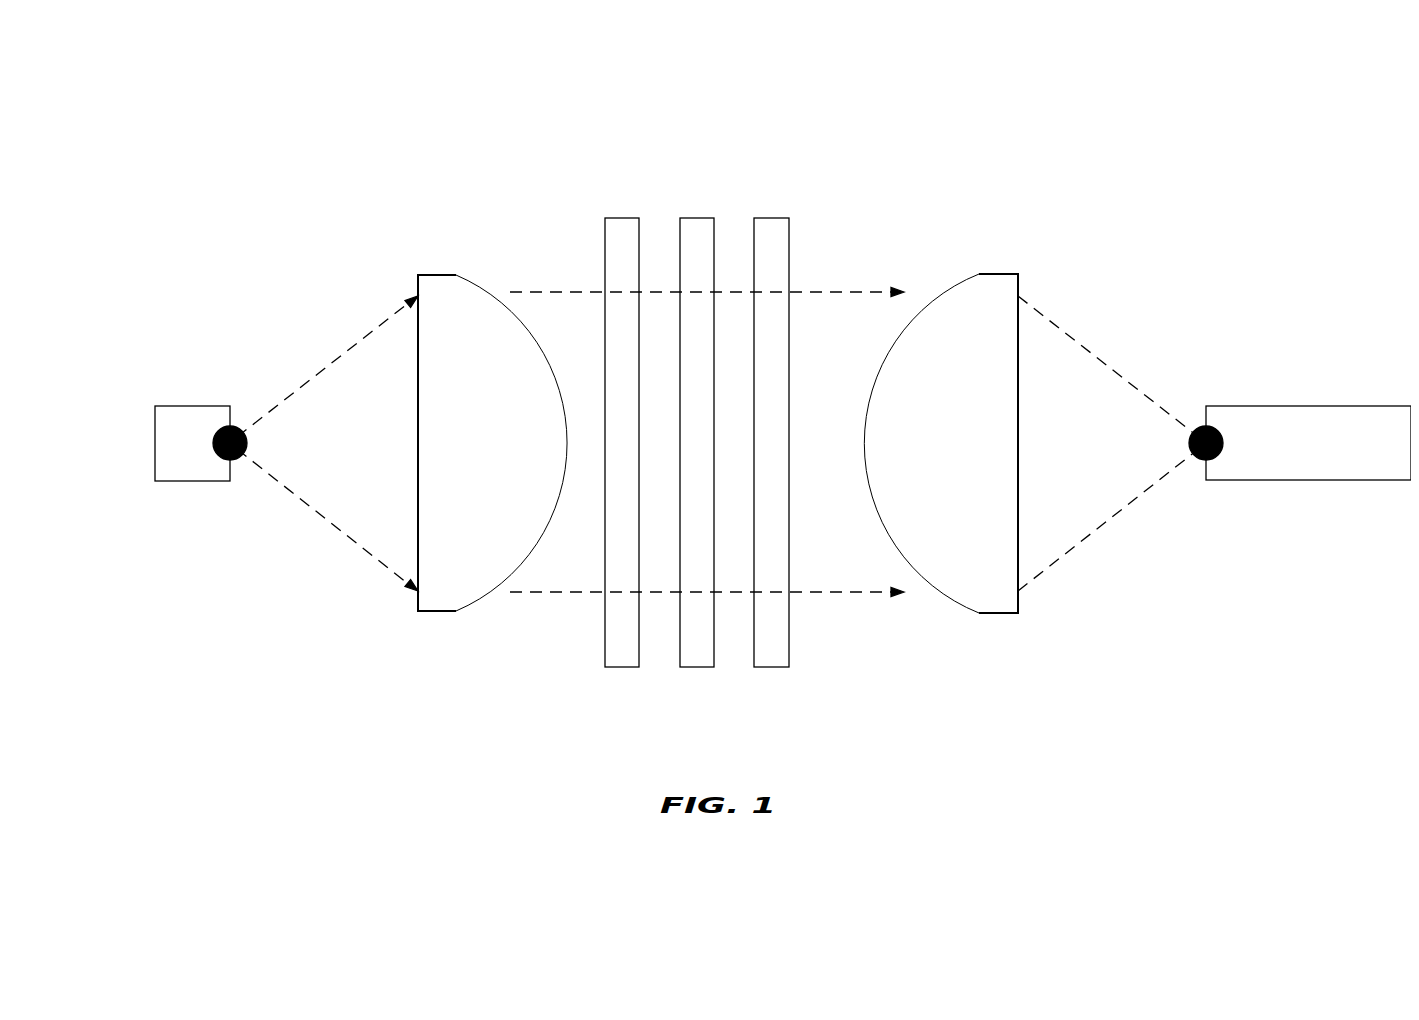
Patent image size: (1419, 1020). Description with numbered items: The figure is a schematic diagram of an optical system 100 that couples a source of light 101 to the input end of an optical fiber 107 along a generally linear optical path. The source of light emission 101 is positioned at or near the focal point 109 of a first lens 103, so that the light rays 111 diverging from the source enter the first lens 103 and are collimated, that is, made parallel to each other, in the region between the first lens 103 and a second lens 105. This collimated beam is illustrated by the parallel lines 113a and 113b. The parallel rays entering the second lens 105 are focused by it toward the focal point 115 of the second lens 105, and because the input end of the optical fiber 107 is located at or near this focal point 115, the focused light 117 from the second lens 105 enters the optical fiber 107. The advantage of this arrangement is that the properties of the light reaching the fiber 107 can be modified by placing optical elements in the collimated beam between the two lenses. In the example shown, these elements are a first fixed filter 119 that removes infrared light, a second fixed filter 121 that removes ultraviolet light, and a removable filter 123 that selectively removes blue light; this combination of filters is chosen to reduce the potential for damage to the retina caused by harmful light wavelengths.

The optical system 100 is at (265, 174).
The source of light 101 is at (175, 405).
The first lens 103 is at (438, 273).
The second lens 105 is at (978, 273).
The optical fiber 107 is at (1315, 405).
The focal point of the first lens 109 is at (232, 455).
The light rays 111 is at (323, 367).
The collimated light beam line 113a is at (574, 291).
The collimated light beam line 113b is at (562, 592).
The focal point of the second lens 115 is at (1200, 457).
The focused light 117 is at (1092, 348).
The first fixed filter 119 is at (615, 217).
The second fixed filter 121 is at (690, 217).
The removable filter 123 is at (773, 217).